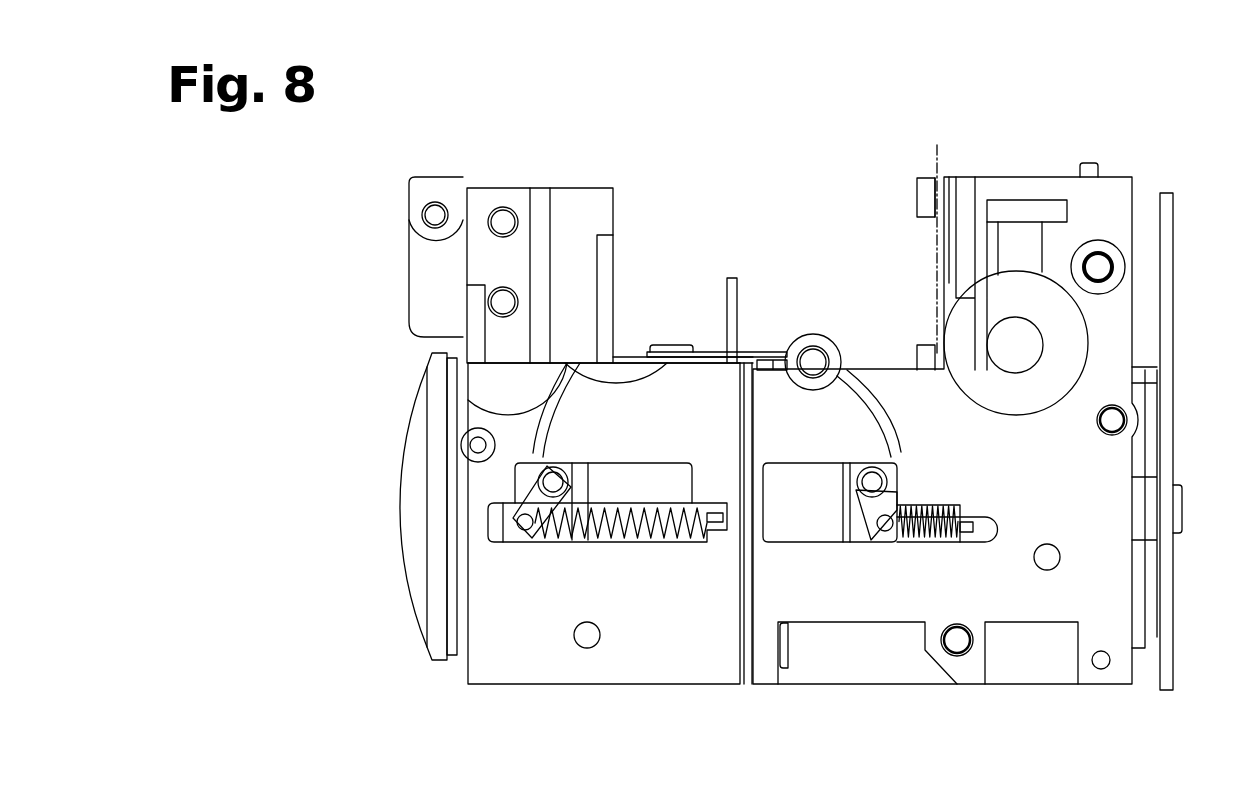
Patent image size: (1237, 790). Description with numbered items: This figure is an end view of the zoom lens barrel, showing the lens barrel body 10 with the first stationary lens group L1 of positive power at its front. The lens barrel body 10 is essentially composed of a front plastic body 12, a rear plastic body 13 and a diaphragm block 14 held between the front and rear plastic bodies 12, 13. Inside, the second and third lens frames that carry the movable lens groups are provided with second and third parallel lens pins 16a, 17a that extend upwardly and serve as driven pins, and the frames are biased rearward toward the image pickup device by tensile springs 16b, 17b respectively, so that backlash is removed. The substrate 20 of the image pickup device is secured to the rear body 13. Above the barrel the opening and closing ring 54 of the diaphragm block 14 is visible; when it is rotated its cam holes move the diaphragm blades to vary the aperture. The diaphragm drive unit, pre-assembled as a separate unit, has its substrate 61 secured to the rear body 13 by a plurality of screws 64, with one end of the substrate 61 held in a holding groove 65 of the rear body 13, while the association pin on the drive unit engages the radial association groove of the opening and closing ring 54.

The lens barrel body 10 is at (1114, 126).
The front plastic body 12 is at (607, 667).
The rear plastic body 13 is at (1035, 607).
The diaphragm block 14 is at (746, 685).
The second lens pin 16a is at (553, 481).
The tensile spring 16b is at (615, 540).
The third lens pin 17a is at (872, 480).
The tensile spring 17b is at (928, 542).
The substrate 20 is at (1168, 412).
The opening and closing ring 54 is at (730, 287).
The substrate 61 is at (939, 192).
The screws 64 is at (922, 203).
The holding groove 65 is at (935, 338).
The first stationary lens group L1 is at (413, 553).